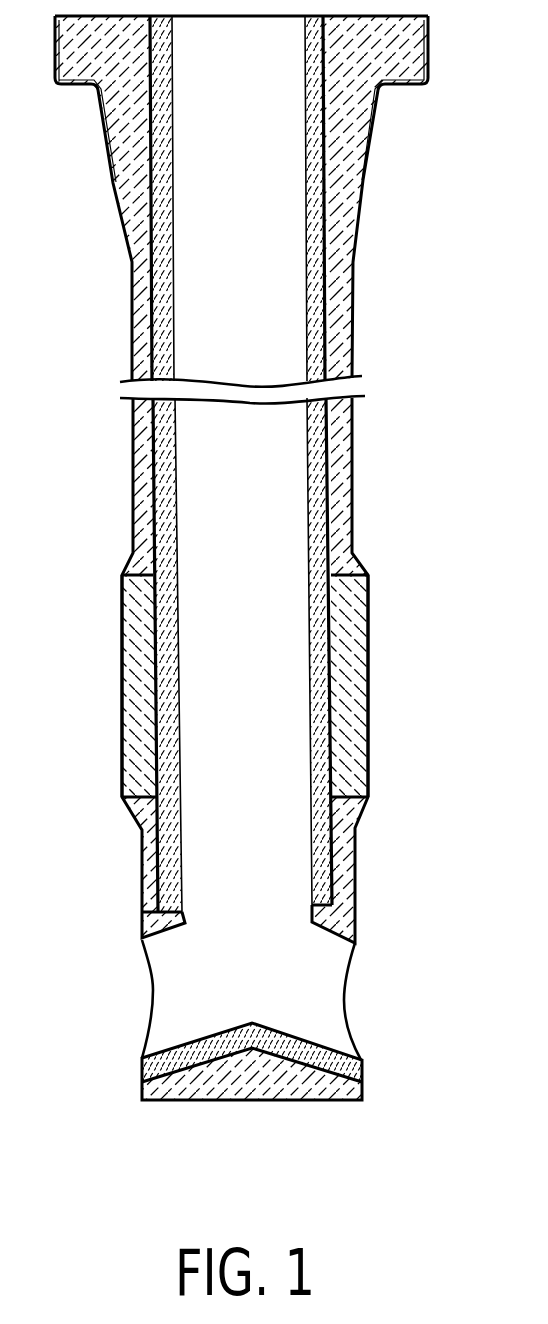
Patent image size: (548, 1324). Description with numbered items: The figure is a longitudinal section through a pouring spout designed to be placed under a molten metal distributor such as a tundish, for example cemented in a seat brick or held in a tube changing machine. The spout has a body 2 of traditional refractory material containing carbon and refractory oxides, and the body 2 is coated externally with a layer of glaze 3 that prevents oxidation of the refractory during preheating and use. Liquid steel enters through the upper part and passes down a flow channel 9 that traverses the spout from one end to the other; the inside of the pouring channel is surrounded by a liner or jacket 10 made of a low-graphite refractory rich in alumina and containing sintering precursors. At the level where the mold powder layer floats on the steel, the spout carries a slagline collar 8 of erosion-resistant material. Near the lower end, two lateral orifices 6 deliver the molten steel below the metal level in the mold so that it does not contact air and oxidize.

The body 2 is at (343, 210).
The glaze 3 is at (353, 450).
The orifices 6 is at (183, 980).
The slagline collar 8 is at (347, 690).
The flow channel 9 is at (245, 510).
The liner or jacket 10 is at (320, 858).